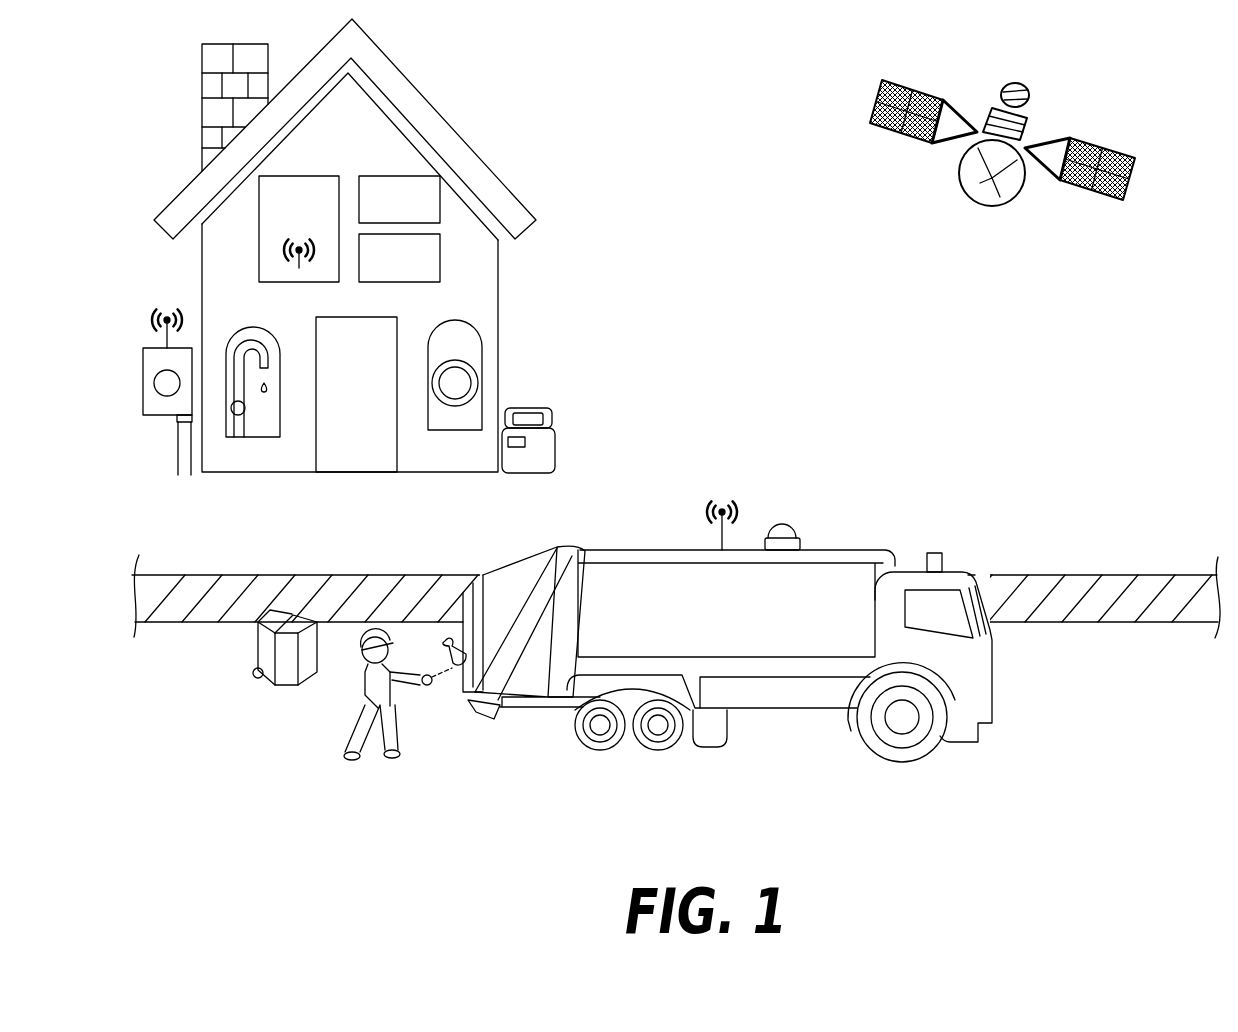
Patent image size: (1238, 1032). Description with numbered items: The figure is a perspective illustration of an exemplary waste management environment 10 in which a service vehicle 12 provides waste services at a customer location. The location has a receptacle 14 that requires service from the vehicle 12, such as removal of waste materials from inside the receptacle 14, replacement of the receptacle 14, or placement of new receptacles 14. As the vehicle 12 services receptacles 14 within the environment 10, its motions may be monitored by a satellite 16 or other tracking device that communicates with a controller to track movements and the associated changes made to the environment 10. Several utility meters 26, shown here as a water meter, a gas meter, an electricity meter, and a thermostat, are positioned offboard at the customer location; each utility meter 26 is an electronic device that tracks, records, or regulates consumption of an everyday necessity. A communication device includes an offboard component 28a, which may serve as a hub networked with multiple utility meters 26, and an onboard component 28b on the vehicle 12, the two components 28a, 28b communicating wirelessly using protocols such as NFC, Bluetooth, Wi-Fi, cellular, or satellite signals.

The waste management environment 10 is at (770, 314).
The service vehicle 12 is at (717, 631).
The receptacle 14 is at (298, 684).
The satellite 16 is at (978, 203).
The utility meter 26 is at (143, 370).
The offboard component 28a is at (170, 343).
The onboard component 28b is at (722, 545).